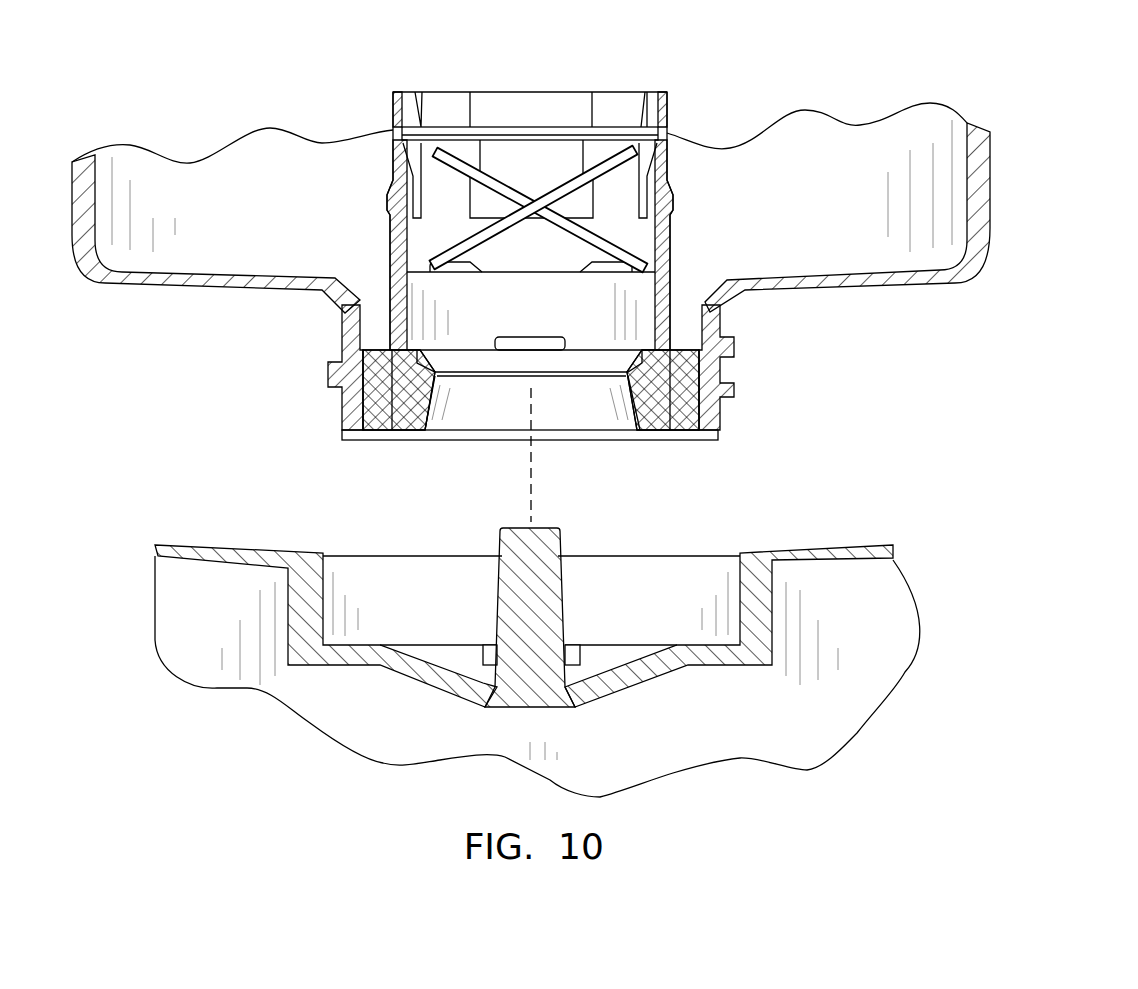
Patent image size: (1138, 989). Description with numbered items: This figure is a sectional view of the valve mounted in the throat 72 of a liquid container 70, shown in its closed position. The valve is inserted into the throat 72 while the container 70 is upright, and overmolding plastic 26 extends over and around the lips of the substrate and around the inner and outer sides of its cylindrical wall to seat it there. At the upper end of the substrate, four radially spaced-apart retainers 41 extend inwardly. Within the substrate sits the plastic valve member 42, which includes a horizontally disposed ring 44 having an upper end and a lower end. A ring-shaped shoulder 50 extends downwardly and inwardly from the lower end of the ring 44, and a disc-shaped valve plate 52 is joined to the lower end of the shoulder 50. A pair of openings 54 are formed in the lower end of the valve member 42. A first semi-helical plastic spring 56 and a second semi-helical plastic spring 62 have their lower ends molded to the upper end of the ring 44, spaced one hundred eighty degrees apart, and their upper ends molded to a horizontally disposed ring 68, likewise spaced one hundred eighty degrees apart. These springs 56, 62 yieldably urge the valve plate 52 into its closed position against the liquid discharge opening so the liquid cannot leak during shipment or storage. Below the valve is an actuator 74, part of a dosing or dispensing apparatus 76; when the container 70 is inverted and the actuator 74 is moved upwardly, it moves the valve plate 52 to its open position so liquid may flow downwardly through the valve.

The overmolding plastic 26 is at (710, 395).
The retainers 41 is at (420, 112).
The valve member 42 is at (610, 115).
The ring 44 is at (645, 278).
The shoulder 50 is at (403, 370).
The valve plate 52 is at (583, 378).
The openings 54 is at (507, 340).
The first semi-helical plastic spring 56 is at (605, 232).
The second semi-helical plastic spring 62 is at (418, 243).
The ring 68 is at (508, 128).
The liquid container 70 is at (987, 185).
The throat 72 is at (710, 388).
The actuator 74 is at (552, 583).
The apparatus 76 is at (868, 538).